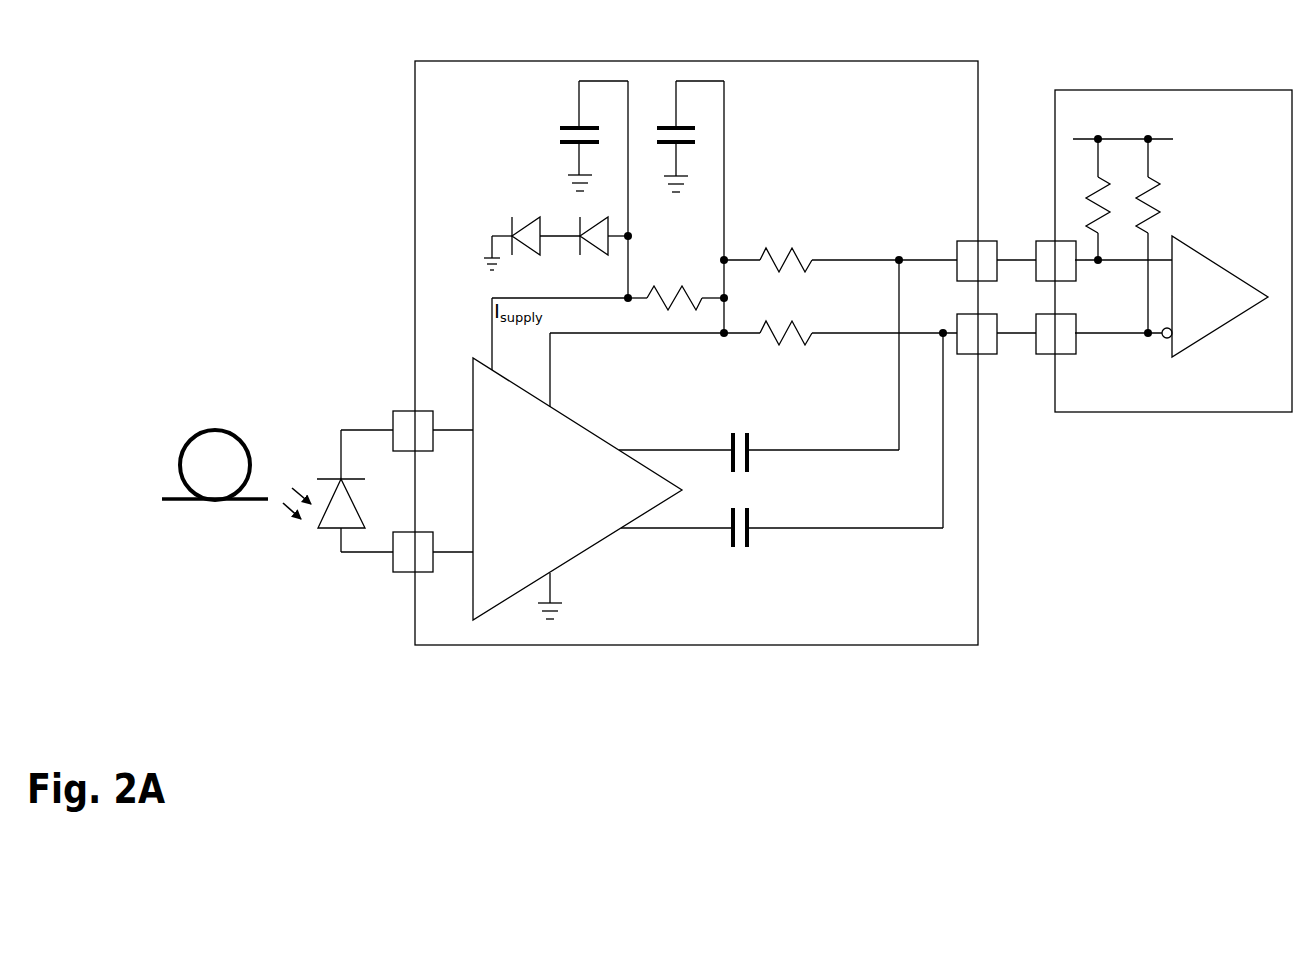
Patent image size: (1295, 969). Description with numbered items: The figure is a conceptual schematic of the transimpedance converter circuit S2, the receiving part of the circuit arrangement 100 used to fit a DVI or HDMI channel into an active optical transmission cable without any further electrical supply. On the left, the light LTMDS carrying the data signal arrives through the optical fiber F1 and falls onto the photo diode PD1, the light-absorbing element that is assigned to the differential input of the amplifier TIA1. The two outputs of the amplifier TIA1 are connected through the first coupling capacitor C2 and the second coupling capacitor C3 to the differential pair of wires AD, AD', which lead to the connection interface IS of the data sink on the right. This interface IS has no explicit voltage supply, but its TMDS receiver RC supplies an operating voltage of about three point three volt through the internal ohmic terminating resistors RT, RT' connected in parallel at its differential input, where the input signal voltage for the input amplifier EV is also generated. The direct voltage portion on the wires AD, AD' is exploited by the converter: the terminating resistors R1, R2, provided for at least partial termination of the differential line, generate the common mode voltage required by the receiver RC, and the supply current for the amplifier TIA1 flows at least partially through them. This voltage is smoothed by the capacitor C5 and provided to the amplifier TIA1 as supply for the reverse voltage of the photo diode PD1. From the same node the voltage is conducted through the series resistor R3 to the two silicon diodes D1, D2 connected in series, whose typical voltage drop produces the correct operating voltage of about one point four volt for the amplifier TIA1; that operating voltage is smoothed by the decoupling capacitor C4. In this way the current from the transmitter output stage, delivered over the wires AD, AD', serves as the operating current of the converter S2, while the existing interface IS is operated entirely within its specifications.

The circuit arrangement 100 is at (241, 90).
The optical fiber F1 is at (215, 465).
The light LTMDS is at (284, 513).
The photo diode PD1 is at (322, 530).
The amplifier TIA1 is at (577, 491).
The transimpedance converter circuit S2 is at (696, 353).
The first terminating resistor R1 is at (840, 247).
The second terminating resistor R2 is at (840, 348).
The series resistor R3 is at (676, 286).
The first coupling capacitor C2 is at (759, 438).
The second coupling capacitor C3 is at (782, 543).
The decoupling capacitor C4 is at (573, 189).
The decoupling capacitor C5 is at (690, 148).
The silicon diode D1 is at (510, 248).
The silicon diode D2 is at (606, 248).
The wire of differential pair AD is at (1016, 232).
The wire of differential pair AD' is at (1016, 359).
The connection interface of the data sink IS is at (1075, 281).
The terminating resistor RT is at (1117, 186).
The terminating resistor RT' is at (1163, 236).
The input amplifier EV is at (1220, 296).
The TMDS receiver RC is at (1173, 251).